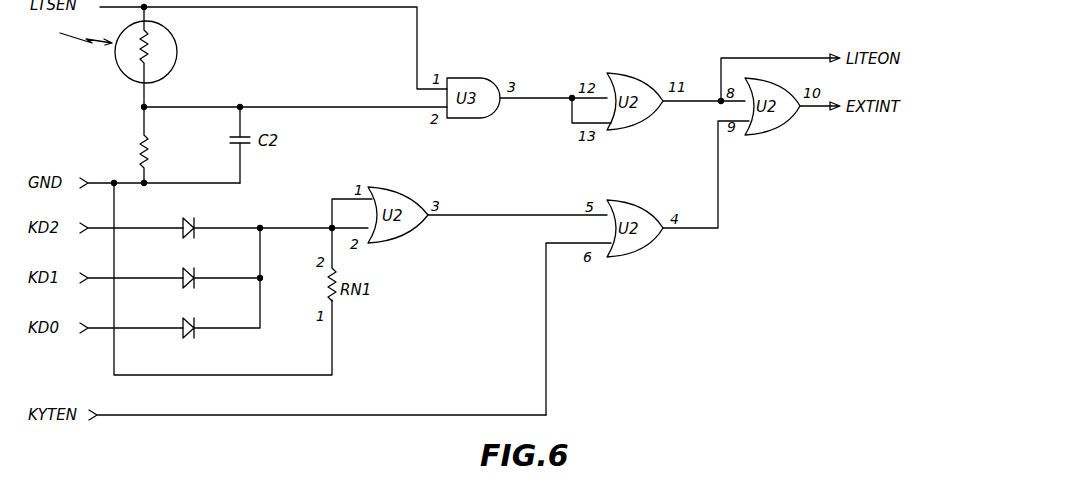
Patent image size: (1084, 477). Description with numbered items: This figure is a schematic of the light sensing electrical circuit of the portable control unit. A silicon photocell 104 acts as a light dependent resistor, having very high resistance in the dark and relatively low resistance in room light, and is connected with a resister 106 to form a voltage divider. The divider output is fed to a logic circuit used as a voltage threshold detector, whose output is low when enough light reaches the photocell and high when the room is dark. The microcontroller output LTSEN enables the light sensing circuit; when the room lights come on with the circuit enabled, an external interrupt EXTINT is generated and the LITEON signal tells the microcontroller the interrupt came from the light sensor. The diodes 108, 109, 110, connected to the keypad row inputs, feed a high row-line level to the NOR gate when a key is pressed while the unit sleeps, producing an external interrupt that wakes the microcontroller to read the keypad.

The silicon photocell 104 is at (177, 37).
The resister 106 is at (139, 146).
The diode 108 is at (197, 222).
The diode 109 is at (197, 272).
The diode 110 is at (197, 322).